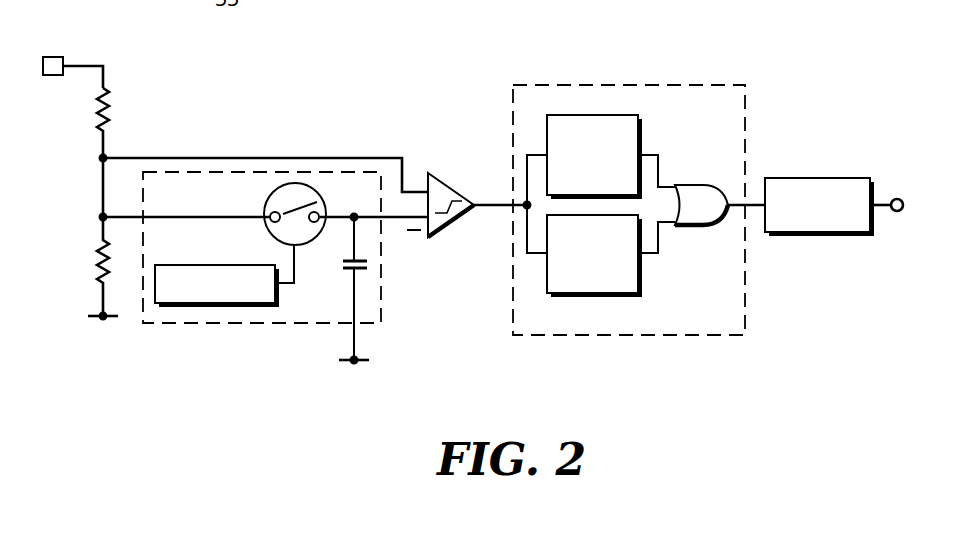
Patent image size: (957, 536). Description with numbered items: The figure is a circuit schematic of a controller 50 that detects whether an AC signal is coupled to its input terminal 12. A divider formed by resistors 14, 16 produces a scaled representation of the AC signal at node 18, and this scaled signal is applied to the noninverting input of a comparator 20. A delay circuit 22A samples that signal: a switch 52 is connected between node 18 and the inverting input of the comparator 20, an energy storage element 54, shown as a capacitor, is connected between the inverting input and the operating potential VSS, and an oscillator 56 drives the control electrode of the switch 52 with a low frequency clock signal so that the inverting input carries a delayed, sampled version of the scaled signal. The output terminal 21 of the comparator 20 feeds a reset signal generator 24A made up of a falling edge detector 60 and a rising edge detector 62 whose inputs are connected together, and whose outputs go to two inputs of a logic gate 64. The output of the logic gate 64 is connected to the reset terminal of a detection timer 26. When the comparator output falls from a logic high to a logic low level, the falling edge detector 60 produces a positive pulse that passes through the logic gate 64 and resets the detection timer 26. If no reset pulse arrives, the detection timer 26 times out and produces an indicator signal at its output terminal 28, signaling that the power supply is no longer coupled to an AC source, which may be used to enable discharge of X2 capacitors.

The input terminal 12 is at (52, 57).
The resistor 14 is at (108, 97).
The resistor 16 is at (98, 259).
The node 18 is at (101, 193).
The comparator 20 is at (445, 238).
The output terminal 21 is at (478, 201).
The delay circuit 22A is at (215, 325).
The reset signal generator 24A is at (672, 337).
The detection timer 26 is at (820, 178).
The output terminal 28 is at (897, 199).
The controller 50 is at (514, 390).
The switch 52 is at (265, 202).
The energy storage element 54 is at (344, 272).
The oscillator 56 is at (200, 265).
The falling edge detector 60 is at (611, 115).
The rising edge detector 62 is at (621, 297).
The logic gate 64 is at (700, 228).